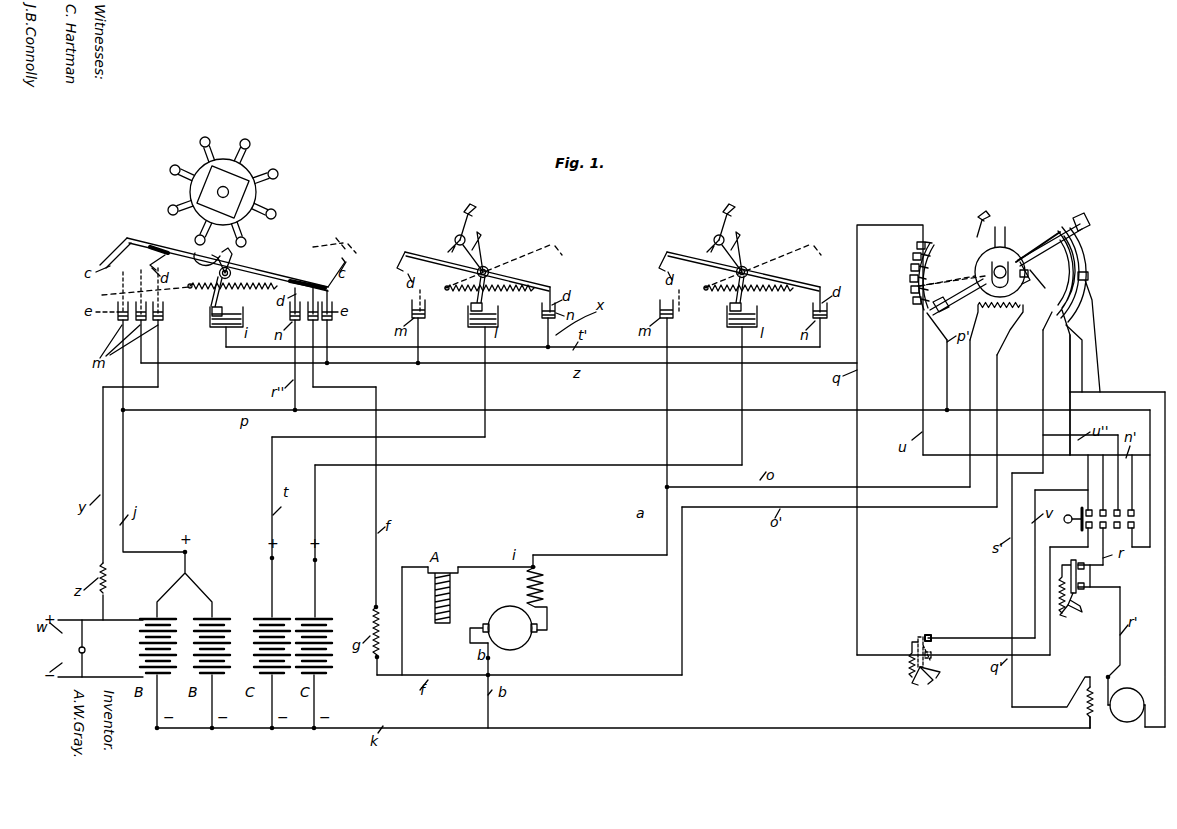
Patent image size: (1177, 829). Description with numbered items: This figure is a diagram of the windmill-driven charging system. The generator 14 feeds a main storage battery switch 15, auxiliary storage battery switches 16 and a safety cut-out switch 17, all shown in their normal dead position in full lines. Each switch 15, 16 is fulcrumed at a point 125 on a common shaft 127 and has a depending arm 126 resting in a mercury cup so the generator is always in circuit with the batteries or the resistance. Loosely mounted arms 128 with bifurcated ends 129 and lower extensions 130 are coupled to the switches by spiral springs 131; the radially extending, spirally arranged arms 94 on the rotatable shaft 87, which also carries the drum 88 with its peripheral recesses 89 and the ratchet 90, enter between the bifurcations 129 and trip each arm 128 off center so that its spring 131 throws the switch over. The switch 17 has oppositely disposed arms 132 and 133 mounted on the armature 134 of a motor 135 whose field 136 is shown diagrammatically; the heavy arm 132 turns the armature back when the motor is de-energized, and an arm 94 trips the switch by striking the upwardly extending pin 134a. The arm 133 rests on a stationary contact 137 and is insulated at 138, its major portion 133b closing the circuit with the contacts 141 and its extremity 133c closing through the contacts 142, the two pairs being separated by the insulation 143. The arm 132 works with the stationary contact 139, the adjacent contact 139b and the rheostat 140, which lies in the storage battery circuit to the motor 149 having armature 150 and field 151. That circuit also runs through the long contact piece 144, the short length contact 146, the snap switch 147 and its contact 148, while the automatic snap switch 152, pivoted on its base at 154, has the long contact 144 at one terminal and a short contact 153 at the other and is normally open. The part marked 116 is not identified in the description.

The generator 14 is at (505, 635).
The main storage battery switch 15 is at (283, 277).
The auxiliary storage battery switch 16 is at (515, 281).
The safety cut-out switch 17 is at (1055, 238).
The rotatable shaft 87 is at (230, 192).
The drum 88 is at (250, 190).
The peripheral recesses 89 is at (203, 162).
The ratchet 90 is at (238, 182).
The radially extending arms 94 is at (210, 137).
The armature arm 116 is at (1076, 615).
The fulcrum 125 is at (235, 270).
The depending arm 126 is at (212, 310).
The common shaft 127 is at (248, 274).
The arms 128 is at (228, 266).
The bifurcated ends 129 is at (192, 254).
The extensions 130 is at (210, 292).
The spiral springs 131 is at (246, 289).
The arm 132 is at (947, 282).
The arm 133 is at (1025, 262).
The major portion of arm 133b is at (1022, 248).
The extremity of arm 133c is at (1046, 287).
The armature 134 is at (999, 225).
The upwardly extending pin 134a is at (1008, 245).
The motor 135 is at (1029, 274).
The field 136 is at (996, 329).
The stationary contact 137 is at (1082, 222).
The insulation 138 is at (1040, 248).
The stationary contact 139 is at (927, 316).
The stationary contact 139b is at (910, 262).
The rheostat 140 is at (910, 282).
The contact members 141 is at (1070, 282).
The contact members 142 is at (1078, 300).
The insulation 143 is at (1090, 276).
The long contact piece 144 is at (930, 637).
The short length contact 146 is at (1090, 578).
The snap switch 147 is at (1062, 582).
The contact 148 is at (1082, 598).
The motor 149 is at (1088, 676).
The armature 150 is at (1128, 722).
The field 151 is at (1098, 732).
The automatic snap switch 152 is at (918, 655).
The short length contact 153 is at (928, 634).
The pivot 154 is at (930, 678).